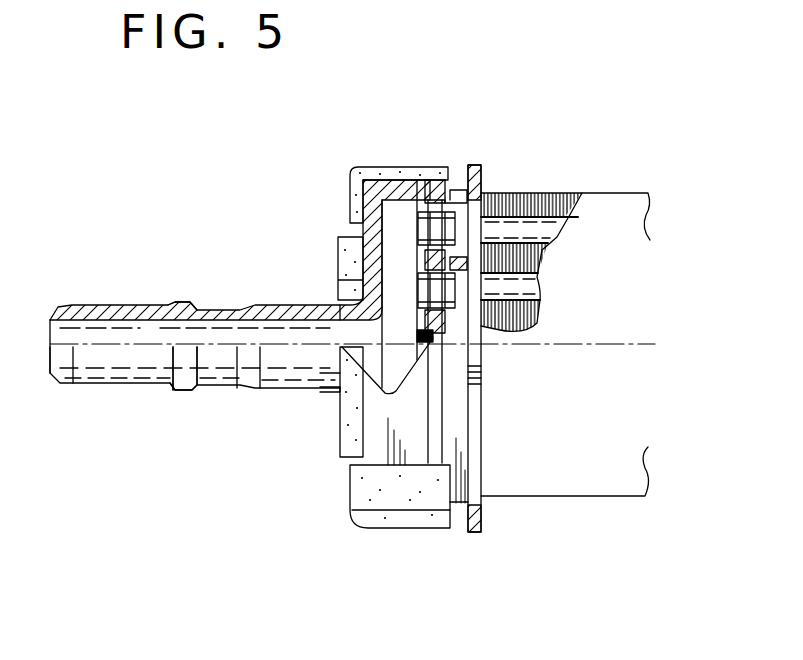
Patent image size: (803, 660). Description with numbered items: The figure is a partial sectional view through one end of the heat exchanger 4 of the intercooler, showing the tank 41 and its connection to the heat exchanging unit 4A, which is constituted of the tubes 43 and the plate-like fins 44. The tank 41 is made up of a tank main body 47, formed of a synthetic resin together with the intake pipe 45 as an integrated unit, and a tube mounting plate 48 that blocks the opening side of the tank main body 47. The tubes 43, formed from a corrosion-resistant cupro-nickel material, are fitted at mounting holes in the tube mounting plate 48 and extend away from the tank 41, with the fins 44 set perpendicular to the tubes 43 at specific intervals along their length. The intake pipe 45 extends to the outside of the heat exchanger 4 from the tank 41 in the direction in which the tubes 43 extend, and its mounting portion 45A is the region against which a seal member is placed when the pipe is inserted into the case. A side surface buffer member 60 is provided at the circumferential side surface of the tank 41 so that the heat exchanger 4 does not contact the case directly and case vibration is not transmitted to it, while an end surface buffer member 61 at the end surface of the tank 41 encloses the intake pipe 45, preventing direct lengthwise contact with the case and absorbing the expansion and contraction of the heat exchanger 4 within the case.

The heat exchanger 4 is at (537, 473).
The heat exchanging unit 4A is at (627, 220).
The tank 41 is at (397, 190).
The tube 43 is at (523, 233).
The plate-like fin 44 is at (565, 200).
The intake pipe 45 is at (130, 362).
The mounting portion 45A is at (220, 363).
The tank main body 47 is at (350, 186).
The tube mounting plate 48 is at (463, 178).
The side surface buffer member 60 is at (397, 490).
The end surface buffer member 61 is at (350, 418).